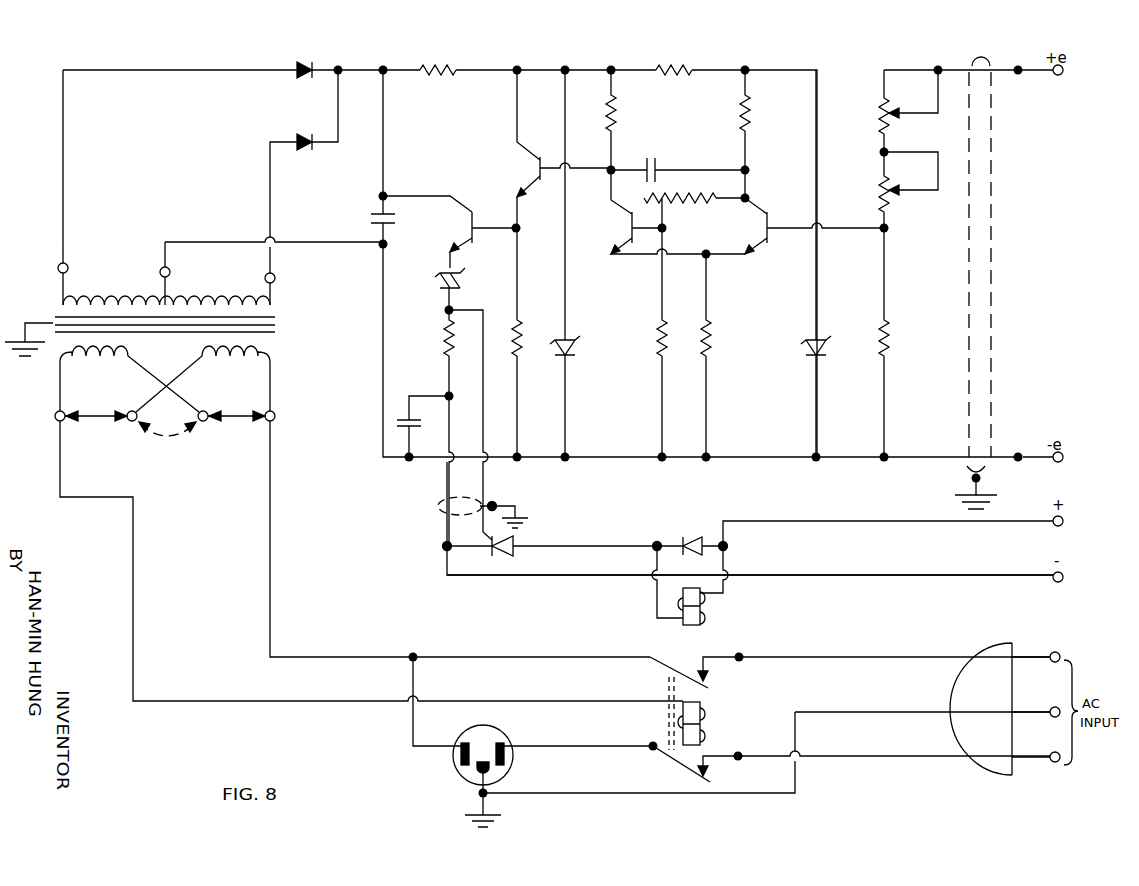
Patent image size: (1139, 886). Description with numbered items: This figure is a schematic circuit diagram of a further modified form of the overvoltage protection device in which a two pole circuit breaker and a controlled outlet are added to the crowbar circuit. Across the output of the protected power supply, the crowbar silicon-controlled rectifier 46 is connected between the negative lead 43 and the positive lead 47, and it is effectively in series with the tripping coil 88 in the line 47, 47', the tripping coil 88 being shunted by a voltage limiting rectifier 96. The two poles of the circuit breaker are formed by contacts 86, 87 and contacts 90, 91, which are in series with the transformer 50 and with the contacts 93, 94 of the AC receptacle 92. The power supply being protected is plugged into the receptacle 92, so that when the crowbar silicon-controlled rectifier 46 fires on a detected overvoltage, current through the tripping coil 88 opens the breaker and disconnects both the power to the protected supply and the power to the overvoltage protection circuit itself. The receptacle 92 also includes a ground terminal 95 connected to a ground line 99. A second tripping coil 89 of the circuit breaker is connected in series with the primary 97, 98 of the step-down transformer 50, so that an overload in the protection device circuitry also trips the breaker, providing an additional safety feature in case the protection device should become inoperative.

The transformer 50 is at (57, 315).
The primary winding 97 is at (98, 356).
The primary winding 98 is at (224, 356).
The silicon-controlled rectifier 46 is at (490, 550).
The output lead 47' is at (585, 532).
The negative lead 43 is at (562, 575).
The voltage limiting rectifier 96 is at (684, 541).
The positive lead 47 is at (888, 519).
The tripping coil 88 is at (707, 614).
The circuit breaker contact 86 is at (667, 672).
The circuit breaker contact 87 is at (708, 678).
The second tripping coil 89 is at (707, 713).
The circuit breaker contact 90 is at (676, 765).
The circuit breaker contact 91 is at (708, 776).
The AC receptacle 92 is at (502, 729).
The receptacle contact 93 is at (455, 755).
The receptacle contact 94 is at (505, 773).
The ground terminal 95 is at (478, 768).
The ground line 99 is at (813, 712).